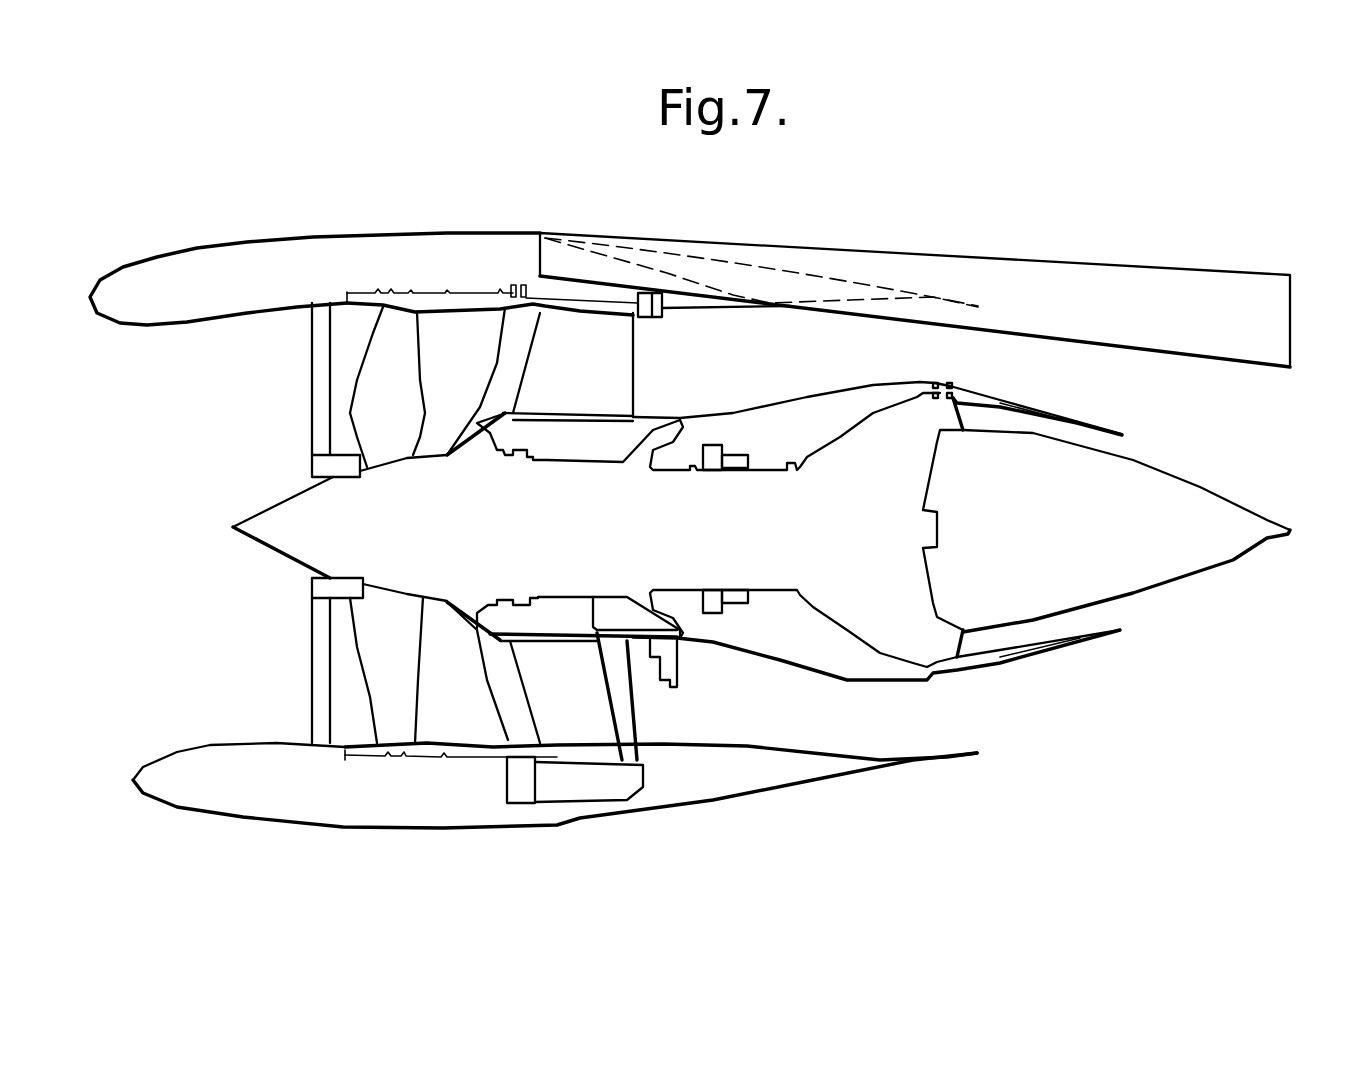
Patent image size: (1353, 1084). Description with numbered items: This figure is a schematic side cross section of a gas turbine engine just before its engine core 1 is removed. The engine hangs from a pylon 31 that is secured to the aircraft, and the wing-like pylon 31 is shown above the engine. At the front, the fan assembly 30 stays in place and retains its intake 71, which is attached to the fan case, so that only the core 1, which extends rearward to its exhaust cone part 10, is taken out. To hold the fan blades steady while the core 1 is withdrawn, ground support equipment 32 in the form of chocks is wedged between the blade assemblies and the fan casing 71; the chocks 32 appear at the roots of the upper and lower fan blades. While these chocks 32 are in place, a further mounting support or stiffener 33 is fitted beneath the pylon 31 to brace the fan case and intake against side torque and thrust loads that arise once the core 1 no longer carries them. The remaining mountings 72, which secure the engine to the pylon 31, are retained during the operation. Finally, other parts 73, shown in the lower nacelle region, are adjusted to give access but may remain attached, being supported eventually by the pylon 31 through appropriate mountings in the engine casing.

The engine core 1 is at (937, 668).
The exhaust cone part 10 is at (1238, 518).
The fan assembly 30 is at (533, 560).
The pylon 31 is at (1165, 287).
The ground support equipment 32 is at (310, 466).
The mounting support 33 is at (655, 317).
The intake 71 is at (222, 267).
The mountings 72 is at (535, 290).
The other parts 73 is at (713, 783).